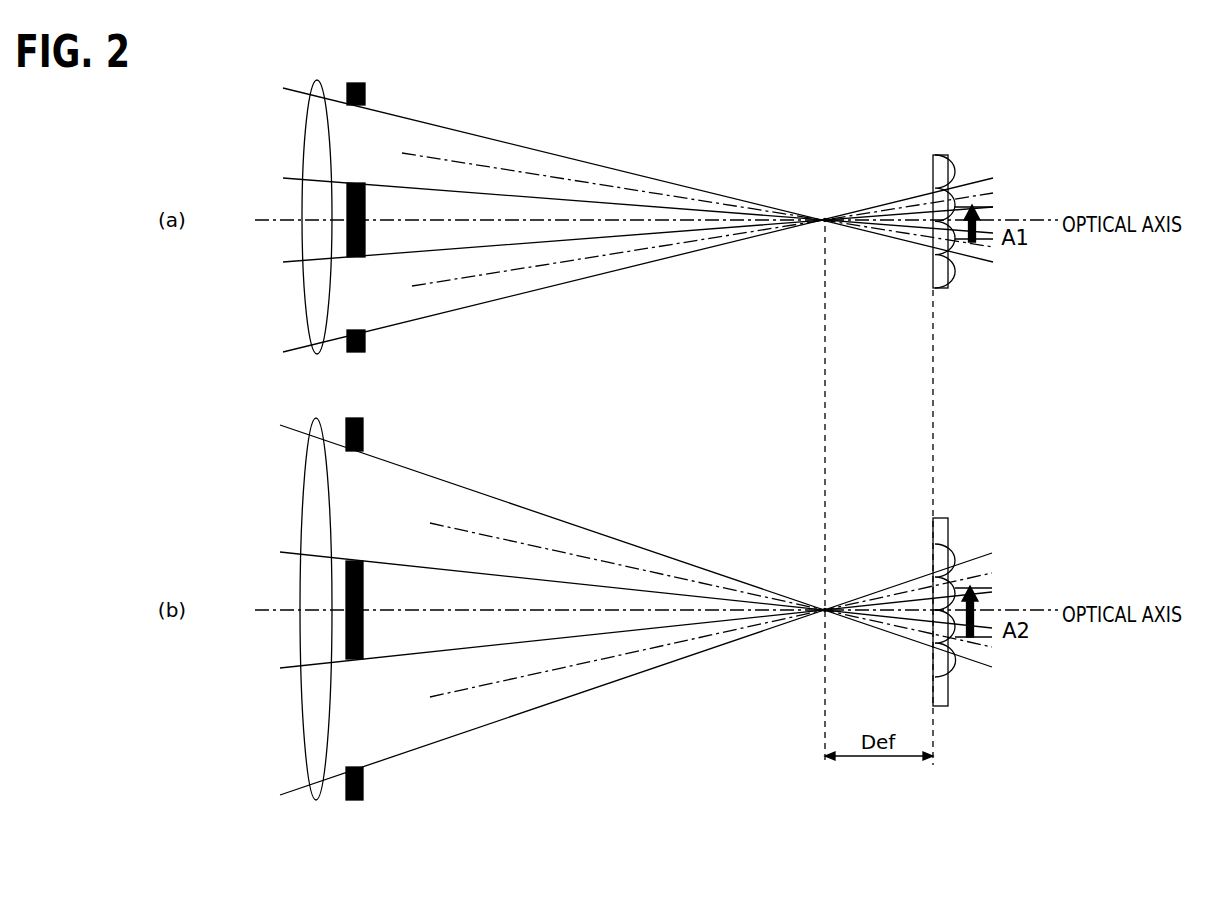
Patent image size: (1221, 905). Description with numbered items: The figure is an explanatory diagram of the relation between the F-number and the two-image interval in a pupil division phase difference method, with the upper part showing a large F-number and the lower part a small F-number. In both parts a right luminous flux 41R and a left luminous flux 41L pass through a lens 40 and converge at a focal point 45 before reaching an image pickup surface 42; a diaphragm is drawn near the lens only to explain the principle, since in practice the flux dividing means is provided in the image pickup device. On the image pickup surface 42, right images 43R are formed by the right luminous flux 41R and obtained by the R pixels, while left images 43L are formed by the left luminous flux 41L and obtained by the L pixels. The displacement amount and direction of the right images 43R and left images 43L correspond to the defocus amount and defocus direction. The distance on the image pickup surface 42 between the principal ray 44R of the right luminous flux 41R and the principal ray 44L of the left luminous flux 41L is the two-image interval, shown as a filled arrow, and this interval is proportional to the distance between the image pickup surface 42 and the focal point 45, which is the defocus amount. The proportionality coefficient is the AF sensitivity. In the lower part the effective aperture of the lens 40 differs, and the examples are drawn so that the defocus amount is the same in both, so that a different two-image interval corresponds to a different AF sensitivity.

The lens 40 is at (319, 80).
The right luminous flux 41R is at (577, 177).
The left luminous flux 41L is at (572, 274).
The principal ray of the right luminous flux 44R is at (476, 163).
The principal ray of the left luminous flux 44L is at (482, 282).
The focal point 45 is at (825, 218).
The image pickup surface 42 is at (934, 157).
The left images 43L is at (950, 193).
The right images 43R is at (958, 252).